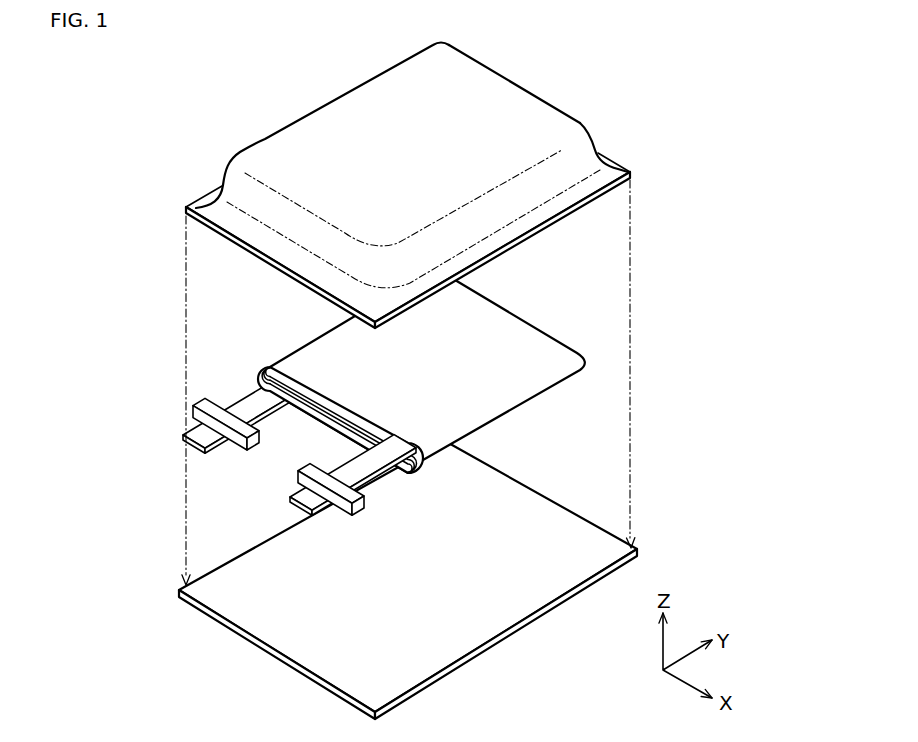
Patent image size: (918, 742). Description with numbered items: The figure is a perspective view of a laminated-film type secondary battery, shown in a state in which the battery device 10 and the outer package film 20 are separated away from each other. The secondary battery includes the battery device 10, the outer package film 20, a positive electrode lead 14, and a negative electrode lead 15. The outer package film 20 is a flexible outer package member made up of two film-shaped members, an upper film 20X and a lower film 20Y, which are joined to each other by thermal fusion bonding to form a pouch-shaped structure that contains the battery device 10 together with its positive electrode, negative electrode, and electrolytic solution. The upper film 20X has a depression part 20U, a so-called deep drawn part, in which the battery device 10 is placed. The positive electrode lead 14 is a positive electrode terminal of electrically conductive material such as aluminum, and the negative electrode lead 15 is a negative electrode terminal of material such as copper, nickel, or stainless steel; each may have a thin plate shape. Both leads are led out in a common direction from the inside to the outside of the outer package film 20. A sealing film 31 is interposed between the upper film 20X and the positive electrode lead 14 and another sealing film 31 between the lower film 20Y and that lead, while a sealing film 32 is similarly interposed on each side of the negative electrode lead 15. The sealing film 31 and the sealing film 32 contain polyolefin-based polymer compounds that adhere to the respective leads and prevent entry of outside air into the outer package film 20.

The battery device 10 is at (377, 409).
The positive electrode lead 14 is at (200, 441).
The negative electrode lead 15 is at (310, 500).
The sealing film 31 is at (210, 410).
The sealing film 32 is at (366, 508).
The outer package film 20 is at (435, 310).
The depression part 20U is at (352, 128).
The upper film 20X is at (510, 103).
The lower film 20Y is at (273, 626).